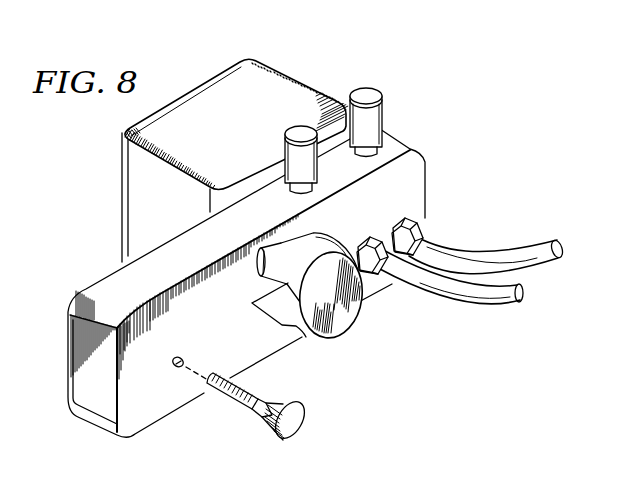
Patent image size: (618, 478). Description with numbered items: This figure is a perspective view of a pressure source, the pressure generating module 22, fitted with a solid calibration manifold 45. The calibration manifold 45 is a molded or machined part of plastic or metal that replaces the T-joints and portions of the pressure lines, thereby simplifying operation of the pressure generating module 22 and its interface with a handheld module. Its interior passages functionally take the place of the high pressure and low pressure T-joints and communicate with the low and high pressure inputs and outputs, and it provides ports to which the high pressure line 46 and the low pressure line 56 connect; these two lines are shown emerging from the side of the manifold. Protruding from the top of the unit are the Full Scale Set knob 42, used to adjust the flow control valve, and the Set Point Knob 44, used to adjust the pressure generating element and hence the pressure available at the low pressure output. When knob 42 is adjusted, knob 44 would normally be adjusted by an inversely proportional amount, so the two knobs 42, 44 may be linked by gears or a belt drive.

The pressure generating module 22 is at (236, 76).
The Full Scale (FS) Set knob 42 is at (296, 131).
The Set Point Knob 44 is at (372, 92).
The calibration manifold 45 is at (418, 177).
The high pressure line 46 is at (442, 308).
The low pressure line 56 is at (483, 256).